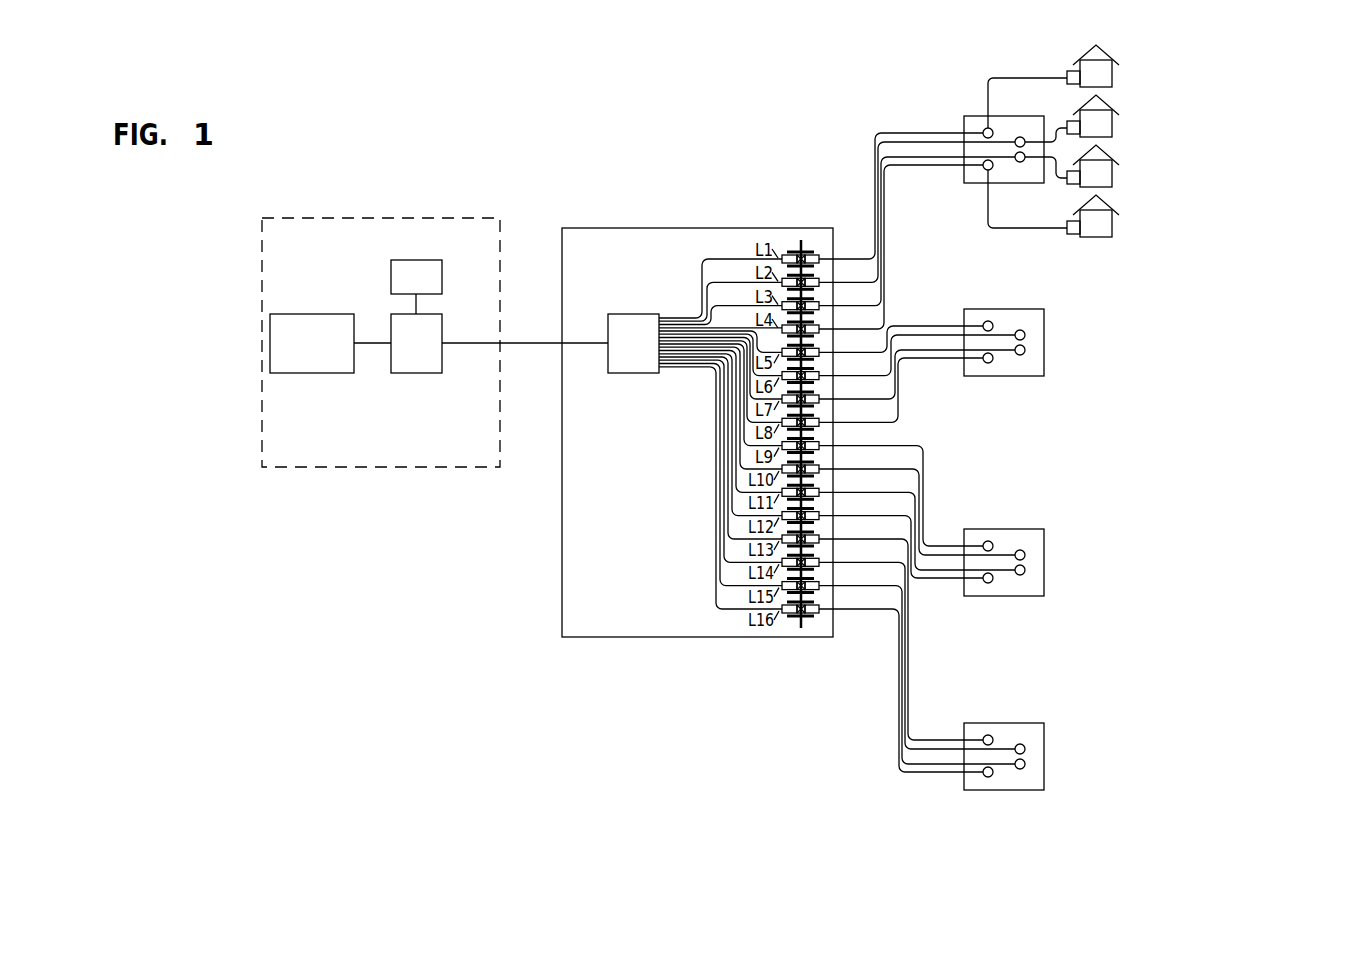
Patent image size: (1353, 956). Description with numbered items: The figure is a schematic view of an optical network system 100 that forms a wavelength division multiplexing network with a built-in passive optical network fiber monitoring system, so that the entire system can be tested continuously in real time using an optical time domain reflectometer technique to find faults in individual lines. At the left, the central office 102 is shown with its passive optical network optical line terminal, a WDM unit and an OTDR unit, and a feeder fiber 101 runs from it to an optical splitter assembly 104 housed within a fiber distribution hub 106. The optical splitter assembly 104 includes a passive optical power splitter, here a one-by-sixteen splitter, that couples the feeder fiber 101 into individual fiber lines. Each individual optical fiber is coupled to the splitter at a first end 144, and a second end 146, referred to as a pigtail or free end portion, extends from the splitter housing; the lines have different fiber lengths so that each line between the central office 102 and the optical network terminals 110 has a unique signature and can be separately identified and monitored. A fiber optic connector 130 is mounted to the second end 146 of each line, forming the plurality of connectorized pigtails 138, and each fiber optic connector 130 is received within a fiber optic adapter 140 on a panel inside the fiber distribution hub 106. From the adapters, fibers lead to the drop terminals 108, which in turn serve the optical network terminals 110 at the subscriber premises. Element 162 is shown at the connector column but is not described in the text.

The optical network system 100 is at (1173, 114).
The feeder fiber 101 is at (520, 345).
The central office 102 is at (255, 467).
The optical splitter assembly 104 is at (623, 380).
The fiber distribution hub 106 is at (683, 226).
The drop terminals 108 is at (1004, 793).
The optical network terminals 110 is at (1075, 236).
The fiber optic connector 130 is at (787, 255).
The plurality of connectorized pigtails 138 is at (708, 608).
The fiber optic adapter 140 is at (813, 253).
The first end 144 is at (663, 312).
The second end 146 is at (738, 606).
The connector termination panel 162 is at (801, 628).